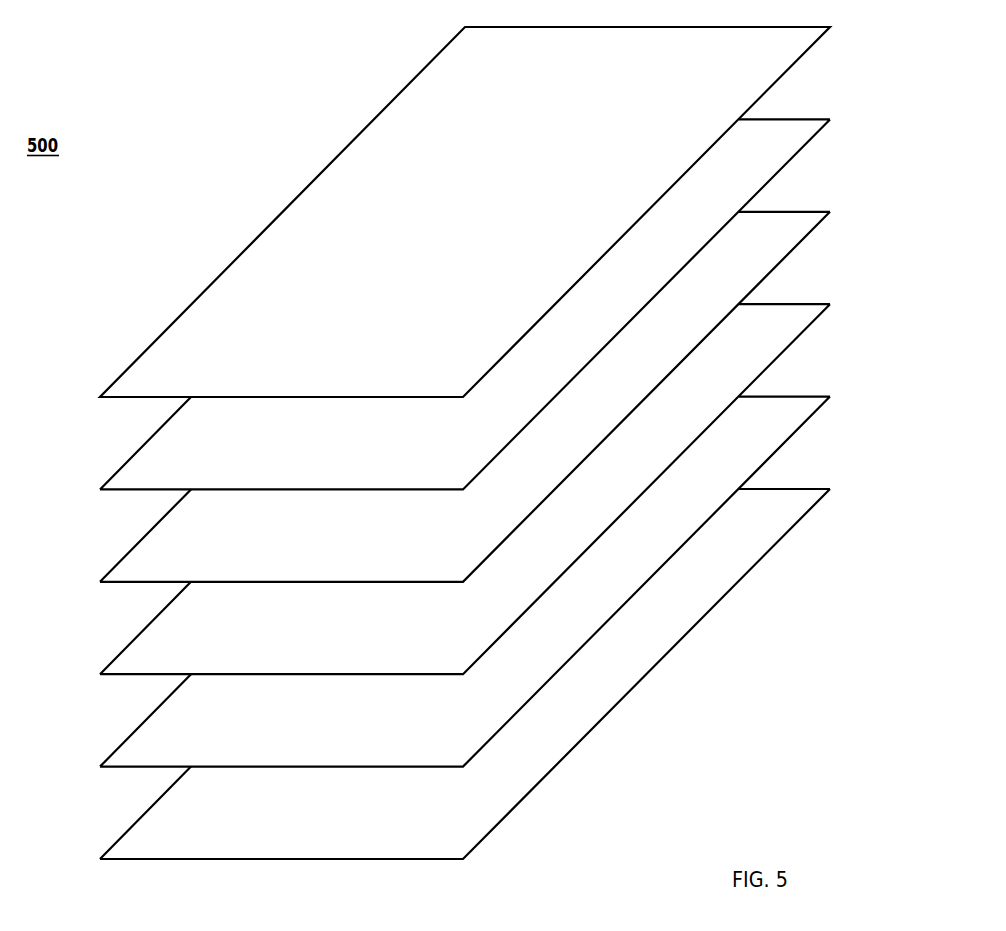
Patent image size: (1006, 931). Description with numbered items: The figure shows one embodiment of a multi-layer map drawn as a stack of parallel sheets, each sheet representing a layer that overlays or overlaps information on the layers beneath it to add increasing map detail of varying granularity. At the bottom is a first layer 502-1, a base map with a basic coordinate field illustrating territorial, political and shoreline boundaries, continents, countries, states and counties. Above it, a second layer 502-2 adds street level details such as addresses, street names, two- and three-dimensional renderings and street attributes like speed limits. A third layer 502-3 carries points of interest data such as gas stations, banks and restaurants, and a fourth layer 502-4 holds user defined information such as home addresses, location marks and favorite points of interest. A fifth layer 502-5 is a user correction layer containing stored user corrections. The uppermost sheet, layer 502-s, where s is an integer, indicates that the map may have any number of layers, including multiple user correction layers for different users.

The layer s 502-s is at (830, 27).
The fifth layer 502-5 is at (830, 119).
The fourth layer 502-4 is at (830, 212).
The third layer 502-3 is at (830, 304).
The second layer 502-2 is at (830, 397).
The first layer 502-1 is at (830, 489).